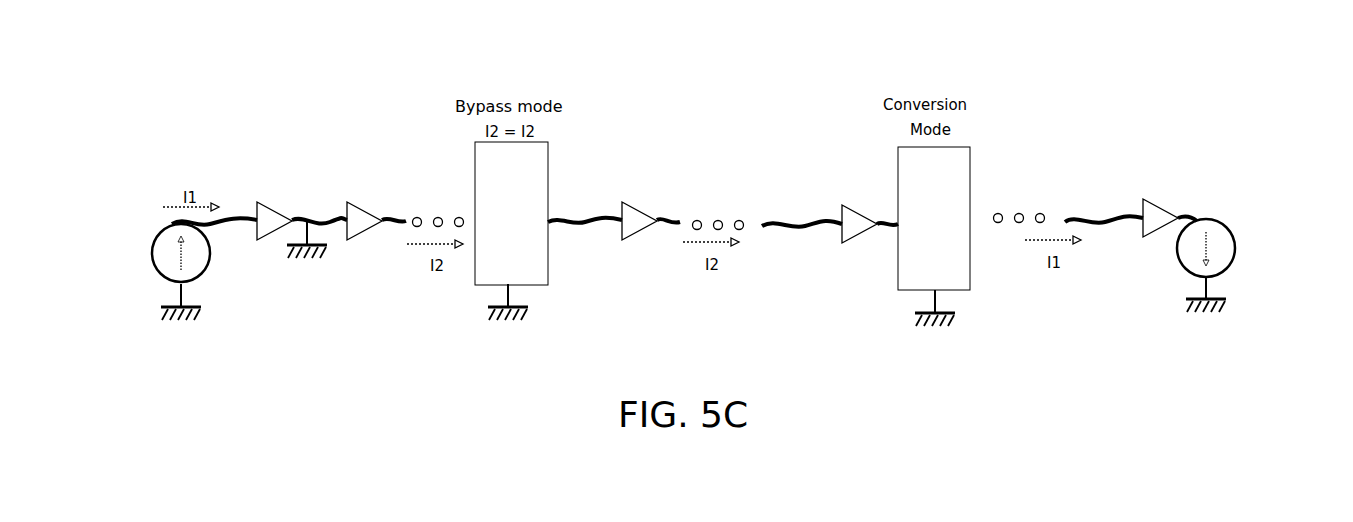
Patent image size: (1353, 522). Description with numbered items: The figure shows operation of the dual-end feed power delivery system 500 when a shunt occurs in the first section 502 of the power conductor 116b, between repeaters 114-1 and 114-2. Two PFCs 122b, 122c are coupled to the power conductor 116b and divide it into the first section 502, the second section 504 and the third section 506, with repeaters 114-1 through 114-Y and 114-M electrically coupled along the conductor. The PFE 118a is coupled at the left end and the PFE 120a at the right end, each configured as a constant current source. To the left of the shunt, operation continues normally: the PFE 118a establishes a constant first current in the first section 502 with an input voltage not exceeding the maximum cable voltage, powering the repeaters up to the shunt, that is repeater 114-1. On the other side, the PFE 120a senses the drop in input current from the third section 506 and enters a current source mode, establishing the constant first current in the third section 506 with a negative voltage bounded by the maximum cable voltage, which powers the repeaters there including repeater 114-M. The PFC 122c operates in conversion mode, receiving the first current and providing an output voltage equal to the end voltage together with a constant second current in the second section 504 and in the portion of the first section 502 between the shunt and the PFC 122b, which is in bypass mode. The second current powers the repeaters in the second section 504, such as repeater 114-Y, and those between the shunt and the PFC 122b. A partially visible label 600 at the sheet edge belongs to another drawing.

The dual-end feed power delivery configuration 500 is at (612, 78).
The PFE 118a is at (163, 231).
The power conductor 116b is at (238, 210).
The repeater 114-1 is at (277, 208).
The repeater 114-2 is at (373, 208).
The repeater 114-Y is at (860, 205).
The repeater 114-M is at (1162, 203).
The PFC 122b is at (511, 231).
The PFC 122c is at (934, 236).
The PFE 120a is at (1237, 242).
The first section 502 is at (292, 310).
The second section 504 is at (672, 285).
The third section 506 is at (1089, 284).
The circuit (partially visible) 600 is at (593, 521).